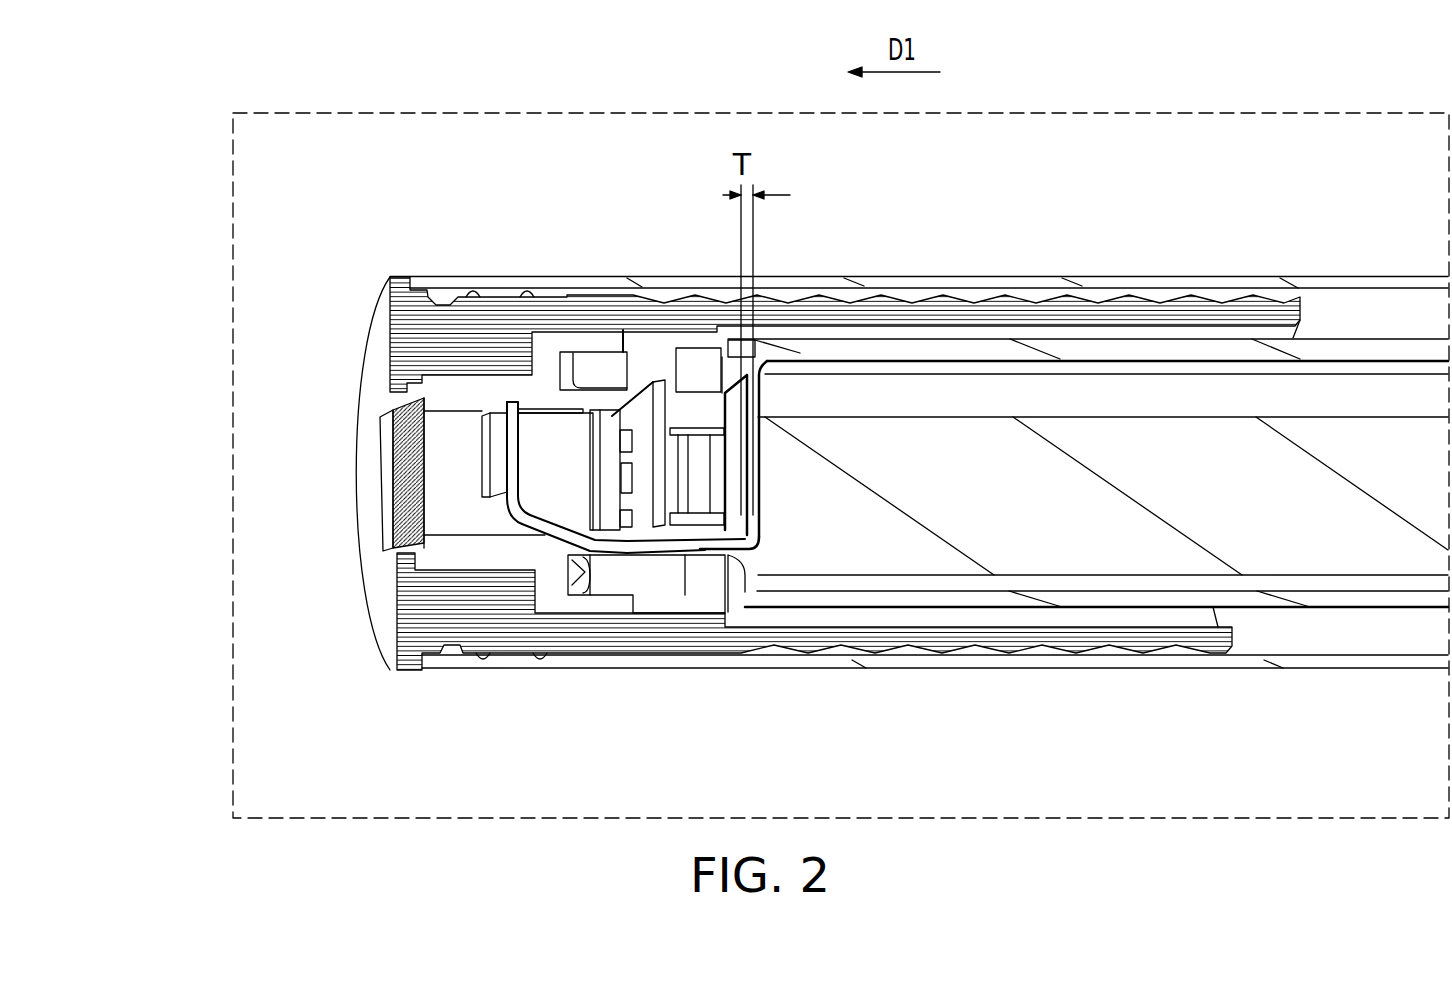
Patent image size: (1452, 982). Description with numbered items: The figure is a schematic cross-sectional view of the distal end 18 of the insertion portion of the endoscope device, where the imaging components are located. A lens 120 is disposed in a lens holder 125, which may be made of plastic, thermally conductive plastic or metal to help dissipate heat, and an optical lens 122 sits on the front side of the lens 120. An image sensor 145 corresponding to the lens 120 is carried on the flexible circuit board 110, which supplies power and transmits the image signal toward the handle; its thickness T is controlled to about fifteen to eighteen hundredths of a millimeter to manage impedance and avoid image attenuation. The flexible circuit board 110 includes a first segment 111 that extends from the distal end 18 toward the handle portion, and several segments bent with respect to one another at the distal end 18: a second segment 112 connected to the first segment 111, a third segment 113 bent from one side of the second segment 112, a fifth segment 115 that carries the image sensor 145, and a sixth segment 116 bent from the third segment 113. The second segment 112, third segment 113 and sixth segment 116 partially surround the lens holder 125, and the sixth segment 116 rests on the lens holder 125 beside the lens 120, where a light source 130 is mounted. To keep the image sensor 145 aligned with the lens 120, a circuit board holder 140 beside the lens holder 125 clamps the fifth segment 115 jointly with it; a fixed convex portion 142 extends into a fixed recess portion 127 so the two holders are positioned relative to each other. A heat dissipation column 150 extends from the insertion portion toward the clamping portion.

The distal end 18 is at (1328, 95).
The flexible circuit board 110 is at (125, 312).
The first segment 111 is at (965, 372).
The second segment 112 is at (760, 486).
The third segment 113 is at (707, 552).
The fifth segment 115 is at (660, 380).
The sixth segment 116 is at (513, 402).
The lens 120 is at (452, 515).
The optical lens 122 is at (385, 487).
The lens holder 125 is at (503, 556).
The fixed recess portion 127 is at (600, 583).
The light source 130 is at (497, 420).
The circuit board holder 140 is at (660, 585).
The fixed convex portion 142 is at (588, 580).
The image sensor 145 is at (607, 418).
The heat dissipation column 150 is at (1101, 543).